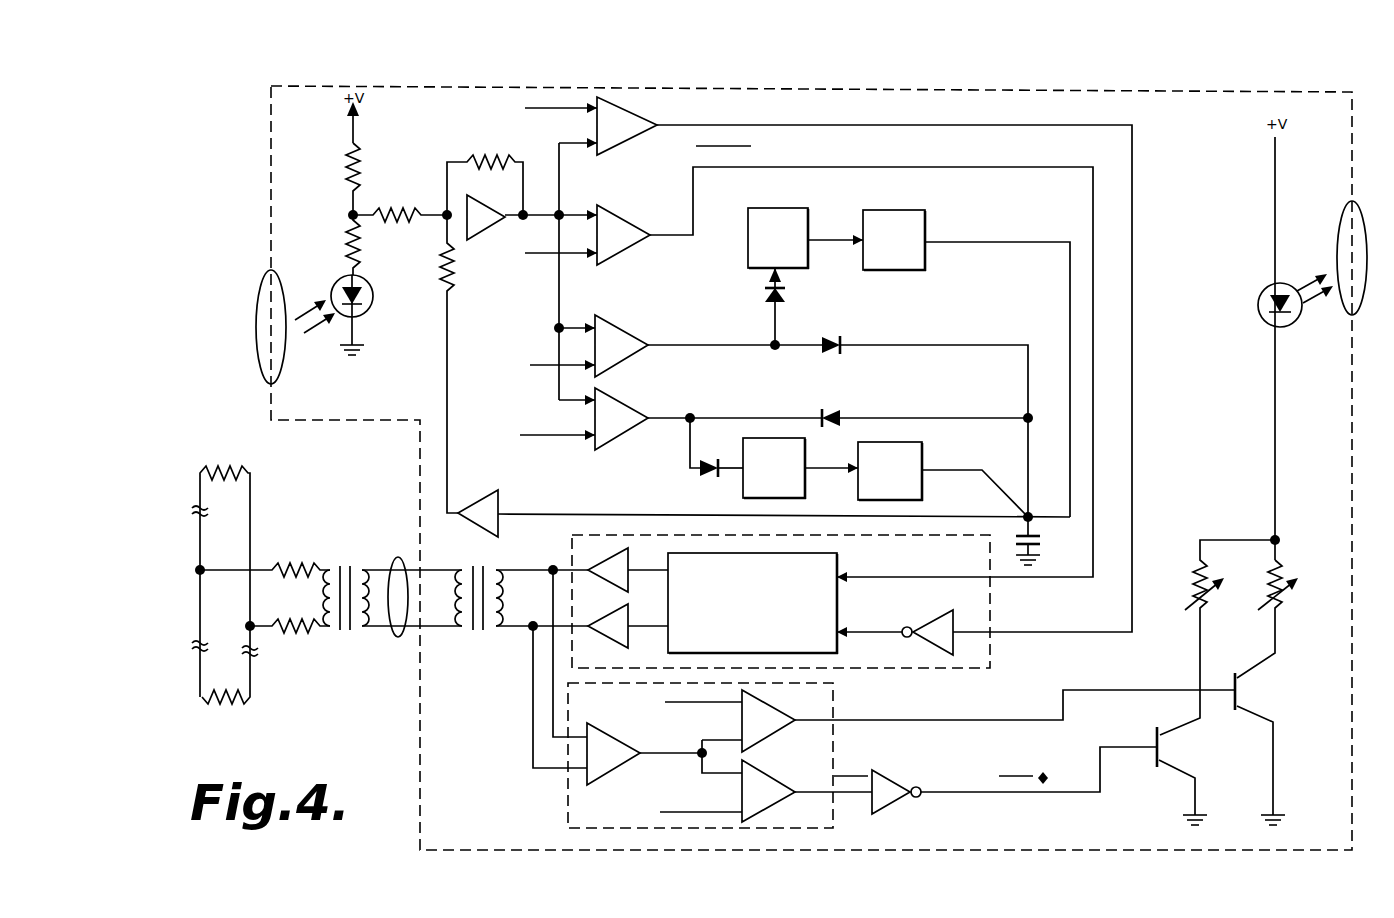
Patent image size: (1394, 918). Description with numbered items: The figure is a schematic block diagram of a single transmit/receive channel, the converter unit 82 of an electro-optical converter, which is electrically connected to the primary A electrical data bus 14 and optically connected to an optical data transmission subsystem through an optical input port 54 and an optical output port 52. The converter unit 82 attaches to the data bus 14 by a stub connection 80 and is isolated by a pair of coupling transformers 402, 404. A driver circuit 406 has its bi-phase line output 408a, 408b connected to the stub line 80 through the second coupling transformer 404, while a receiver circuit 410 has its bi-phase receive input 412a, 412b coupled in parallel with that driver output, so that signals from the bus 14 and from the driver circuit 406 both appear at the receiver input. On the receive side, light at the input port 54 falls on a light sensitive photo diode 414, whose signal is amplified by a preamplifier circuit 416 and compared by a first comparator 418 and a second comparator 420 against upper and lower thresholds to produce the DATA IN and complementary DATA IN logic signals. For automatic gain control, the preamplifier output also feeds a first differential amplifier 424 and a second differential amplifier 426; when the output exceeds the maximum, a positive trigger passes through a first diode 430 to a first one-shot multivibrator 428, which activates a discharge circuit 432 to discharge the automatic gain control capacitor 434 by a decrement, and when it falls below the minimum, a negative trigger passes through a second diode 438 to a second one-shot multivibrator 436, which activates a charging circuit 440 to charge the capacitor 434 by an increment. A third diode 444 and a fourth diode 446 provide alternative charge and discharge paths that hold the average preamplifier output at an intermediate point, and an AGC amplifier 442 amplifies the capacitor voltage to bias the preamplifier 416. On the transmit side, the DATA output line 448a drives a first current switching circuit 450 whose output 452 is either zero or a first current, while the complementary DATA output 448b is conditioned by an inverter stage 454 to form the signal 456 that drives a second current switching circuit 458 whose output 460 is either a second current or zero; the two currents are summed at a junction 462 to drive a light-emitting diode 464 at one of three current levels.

The primary A electrical data bus 14 is at (262, 502).
The optical output (transmitting) port 52 is at (1346, 210).
The optical input (receiving) port 54 is at (283, 376).
The stub connection 80 is at (396, 637).
The converter unit (first module) 82 is at (466, 832).
The first coupling transformer 402 is at (338, 550).
The second coupling transformer 404 is at (478, 638).
The driver circuit 406 is at (990, 606).
The bi-phase line output 408a is at (578, 556).
The bi-phase line output 408b is at (580, 585).
The receiver circuit 410 is at (568, 805).
The bi-phase receive input 412a is at (533, 684).
The bi-phase receive input 412b is at (533, 737).
The light sensitive photo diode 414 is at (372, 300).
The preamplifier circuit 416 is at (490, 235).
The first comparator circuit 418 is at (630, 150).
The second comparator circuit 420 is at (658, 272).
The first differential amplifier 424 is at (625, 367).
The second differential amplifier 426 is at (642, 465).
The first one-shot multivibrator circuit 428 is at (790, 208).
The first diode 430 is at (764, 297).
The discharge circuit 432 is at (925, 222).
The automatic gain control capacitor 434 is at (1036, 542).
The second one-shot multivibrator circuit 436 is at (736, 488).
The second diode 438 is at (690, 470).
The charging circuit 440 is at (922, 482).
The AGC amplifier 442 is at (480, 490).
The third diode 444 is at (830, 336).
The fourth diode 446 is at (830, 409).
The DATA output line 448a is at (935, 720).
The DATA-bar output 448b is at (850, 796).
The first current switching circuit 450 is at (1252, 690).
The output of first current switching circuit 452 is at (1276, 628).
The inverter stage 454 is at (895, 782).
The DATA-bar* signal 456 is at (1100, 792).
The second current switching circuit 458 is at (1170, 751).
The output of second current switching circuit 460 is at (1200, 668).
The junction 462 is at (1277, 538).
The light-emitting diode 464 is at (1261, 315).